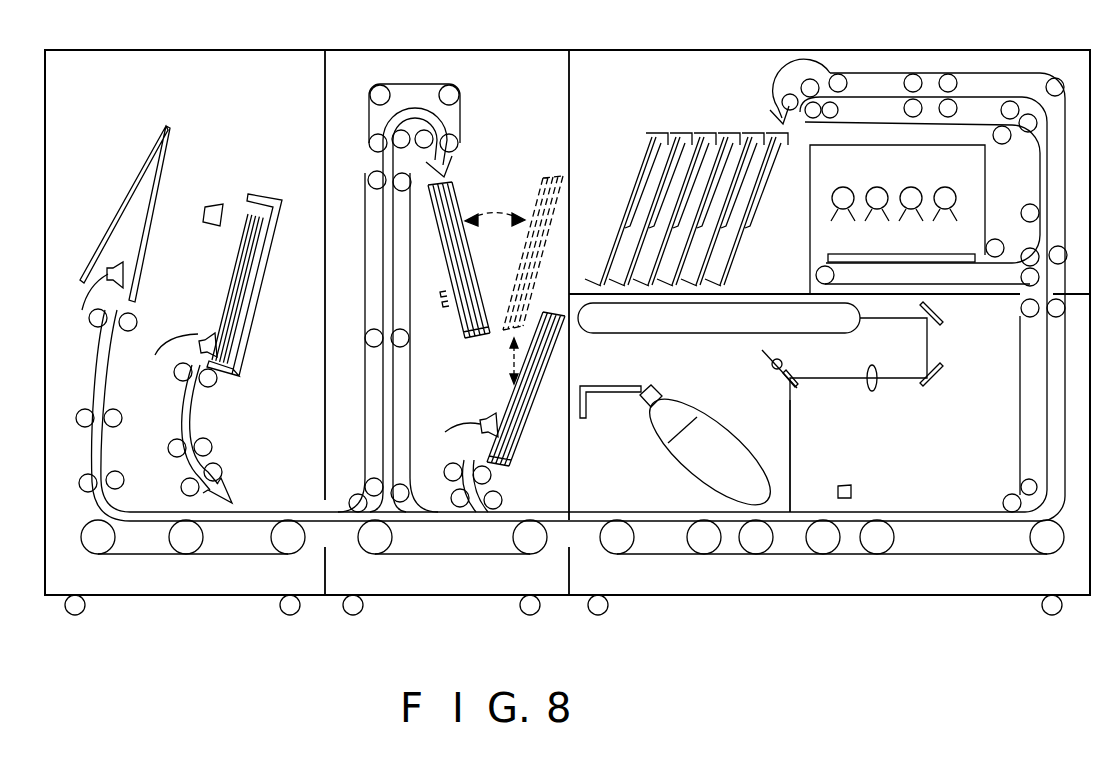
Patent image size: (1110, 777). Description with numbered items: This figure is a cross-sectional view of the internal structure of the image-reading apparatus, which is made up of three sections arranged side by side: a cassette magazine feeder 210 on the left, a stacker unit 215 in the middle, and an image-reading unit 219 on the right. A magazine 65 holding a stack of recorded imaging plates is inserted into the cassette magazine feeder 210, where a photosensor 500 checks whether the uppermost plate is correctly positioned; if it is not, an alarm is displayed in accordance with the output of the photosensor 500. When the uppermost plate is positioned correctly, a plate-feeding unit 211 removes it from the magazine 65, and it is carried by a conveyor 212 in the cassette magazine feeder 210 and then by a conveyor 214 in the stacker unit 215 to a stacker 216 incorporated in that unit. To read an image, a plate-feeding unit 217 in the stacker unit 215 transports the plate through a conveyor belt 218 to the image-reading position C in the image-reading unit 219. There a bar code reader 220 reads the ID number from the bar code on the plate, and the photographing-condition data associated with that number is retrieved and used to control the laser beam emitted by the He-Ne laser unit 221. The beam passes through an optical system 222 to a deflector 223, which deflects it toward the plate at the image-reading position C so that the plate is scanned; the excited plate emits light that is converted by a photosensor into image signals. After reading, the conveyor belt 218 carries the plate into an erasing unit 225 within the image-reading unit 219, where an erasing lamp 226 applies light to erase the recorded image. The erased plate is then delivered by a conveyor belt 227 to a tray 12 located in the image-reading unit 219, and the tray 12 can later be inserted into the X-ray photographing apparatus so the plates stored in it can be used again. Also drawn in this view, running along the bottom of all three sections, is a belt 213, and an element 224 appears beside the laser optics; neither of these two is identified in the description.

The cassette magazine feeder 210 is at (157, 50).
The stacker unit 215 is at (434, 50).
The image-reading unit 219 is at (692, 50).
The conveyor belt 227 is at (966, 97).
The photosensor 500 is at (205, 208).
The magazine 65 is at (268, 262).
The plate-feeding unit 211 is at (200, 345).
The conveyor 212 is at (199, 417).
The transport belt 213 is at (270, 511).
The conveyor 214 is at (362, 378).
The stacker 216 is at (455, 312).
The plate-feeding unit 217 is at (482, 422).
The conveyor belt 218 is at (529, 511).
The tray 12 is at (704, 142).
The erasing unit 225 is at (805, 222).
The erasing lamp 226 is at (848, 188).
The He-Ne laser unit 221 is at (664, 334).
The optical system 222 is at (932, 350).
The deflector 223 is at (795, 364).
The light guide 224 is at (648, 418).
The bar code reader 220 is at (852, 486).
The image-reading position C is at (804, 512).